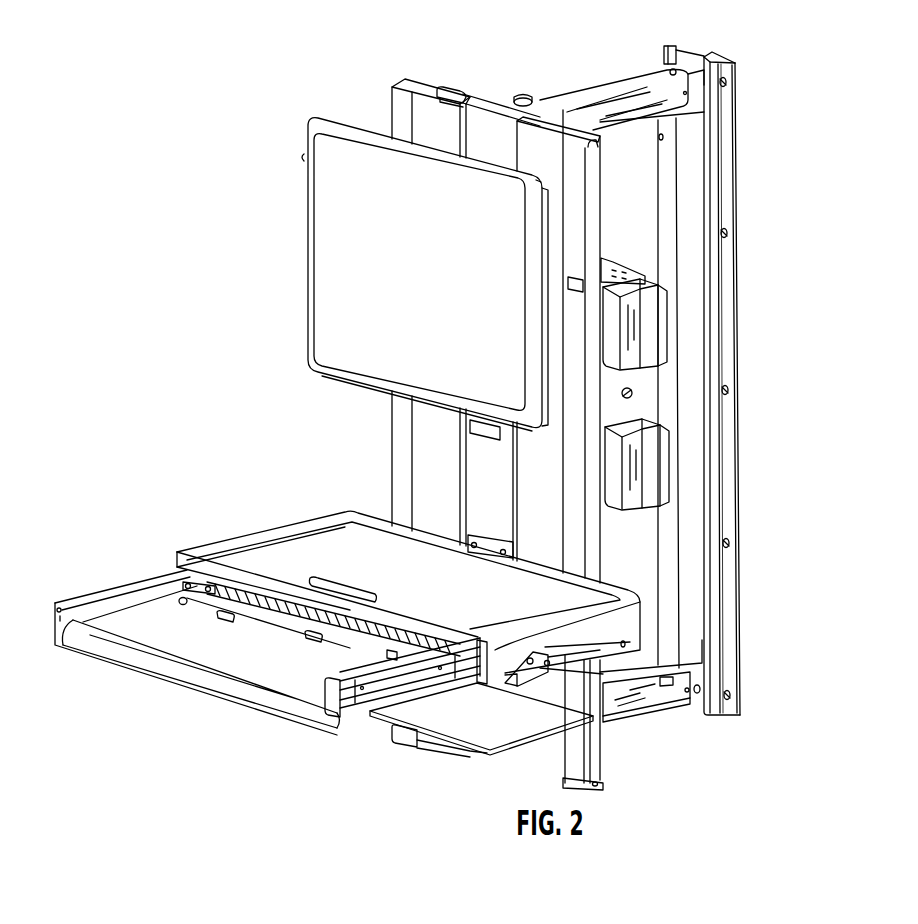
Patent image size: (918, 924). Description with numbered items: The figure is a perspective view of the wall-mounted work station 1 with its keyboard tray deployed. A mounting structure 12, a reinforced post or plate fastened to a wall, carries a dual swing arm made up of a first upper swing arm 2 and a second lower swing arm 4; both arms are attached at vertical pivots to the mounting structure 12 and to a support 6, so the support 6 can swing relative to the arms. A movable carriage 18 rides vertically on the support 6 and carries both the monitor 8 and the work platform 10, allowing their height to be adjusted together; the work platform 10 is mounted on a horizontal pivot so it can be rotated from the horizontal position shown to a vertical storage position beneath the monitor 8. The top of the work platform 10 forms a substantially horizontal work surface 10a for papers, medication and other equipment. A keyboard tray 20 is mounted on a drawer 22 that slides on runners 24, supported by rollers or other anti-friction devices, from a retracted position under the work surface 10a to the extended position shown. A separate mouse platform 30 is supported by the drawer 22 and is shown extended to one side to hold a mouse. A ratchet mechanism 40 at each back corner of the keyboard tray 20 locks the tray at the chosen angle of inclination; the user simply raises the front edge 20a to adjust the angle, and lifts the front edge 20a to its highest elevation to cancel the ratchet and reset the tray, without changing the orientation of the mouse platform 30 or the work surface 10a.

The work station 1 is at (773, 389).
The first upper swing arm 2 is at (609, 84).
The second lower swing arm 4 is at (620, 715).
The support 6 is at (488, 86).
The monitor 8 is at (405, 274).
The work platform 10 is at (408, 567).
The work surface 10a is at (405, 545).
The mounting structure 12 is at (737, 383).
The movable carriage 18 is at (431, 285).
The keyboard tray 20 is at (257, 631).
The front edge 20a is at (200, 674).
The drawer 22 is at (325, 723).
The runners 24 is at (410, 703).
The mouse platform 30 is at (481, 743).
The ratchet mechanism 40 is at (364, 614).